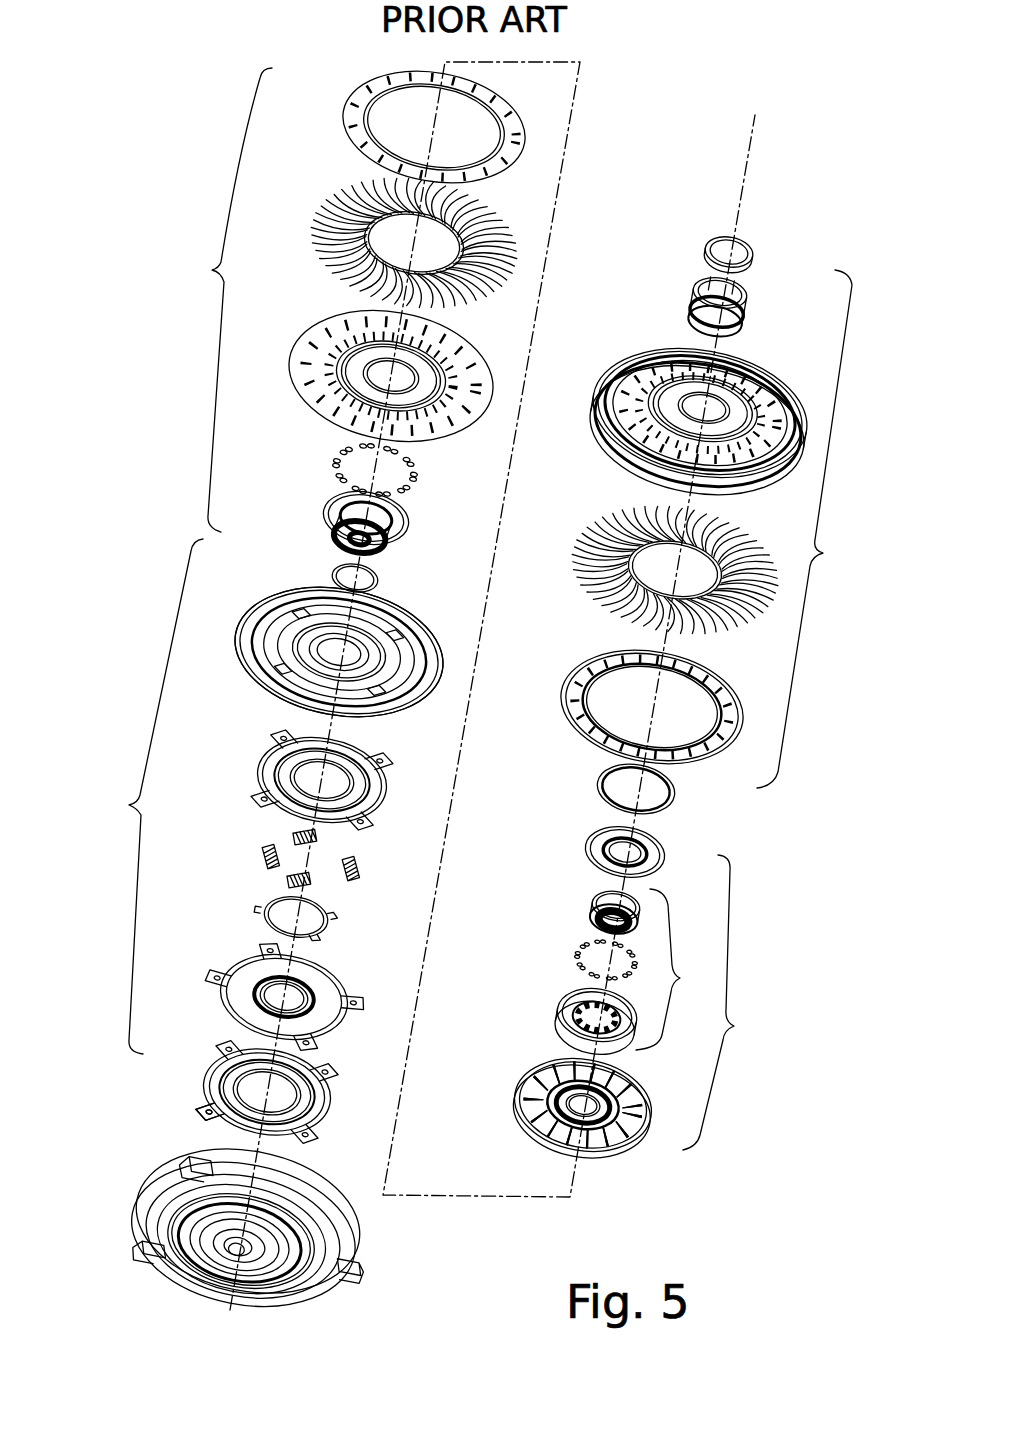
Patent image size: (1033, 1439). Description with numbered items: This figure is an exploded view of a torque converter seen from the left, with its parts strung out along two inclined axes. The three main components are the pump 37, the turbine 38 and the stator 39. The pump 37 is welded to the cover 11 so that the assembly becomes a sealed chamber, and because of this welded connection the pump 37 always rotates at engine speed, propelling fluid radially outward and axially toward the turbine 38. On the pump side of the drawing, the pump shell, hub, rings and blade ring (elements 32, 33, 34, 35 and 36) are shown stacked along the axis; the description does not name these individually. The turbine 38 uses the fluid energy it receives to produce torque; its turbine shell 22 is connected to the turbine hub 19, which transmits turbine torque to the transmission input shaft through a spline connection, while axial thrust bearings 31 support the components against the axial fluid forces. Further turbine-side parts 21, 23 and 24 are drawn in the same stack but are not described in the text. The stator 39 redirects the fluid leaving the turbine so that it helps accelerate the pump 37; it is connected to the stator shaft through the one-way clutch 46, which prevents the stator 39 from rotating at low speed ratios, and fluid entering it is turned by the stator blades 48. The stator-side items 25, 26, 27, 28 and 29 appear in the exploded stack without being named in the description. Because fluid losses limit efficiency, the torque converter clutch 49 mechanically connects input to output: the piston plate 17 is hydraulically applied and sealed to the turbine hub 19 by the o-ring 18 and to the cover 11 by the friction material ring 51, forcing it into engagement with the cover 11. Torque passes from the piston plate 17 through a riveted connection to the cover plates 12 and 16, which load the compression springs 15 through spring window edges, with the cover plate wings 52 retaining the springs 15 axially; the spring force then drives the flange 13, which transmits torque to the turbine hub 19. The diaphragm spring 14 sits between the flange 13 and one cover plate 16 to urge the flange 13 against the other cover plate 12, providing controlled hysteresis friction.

The cover 11 is at (159, 1138).
The cover plate 12 is at (202, 1055).
The flange 13 is at (217, 960).
The diaphragm spring 14 is at (250, 904).
The compression springs 15 is at (245, 825).
The cover plate 16 is at (245, 743).
The piston plate 17 is at (237, 603).
The o-ring 18 is at (317, 558).
The turbine hub 19 is at (307, 502).
The rollers 21 is at (330, 452).
The turbine shell 22 is at (292, 335).
The turbine blades 23 is at (314, 207).
The turbine core ring 24 is at (333, 112).
The stator 25 is at (503, 1065).
The one-way clutch inner race 26 is at (545, 997).
The clutch rollers 27 is at (563, 947).
The bearing 28 is at (578, 888).
The thrust washer 29 is at (577, 830).
The axial thrust bearings 31 is at (585, 767).
The pump core ring 32 is at (568, 652).
The pump blades 33 is at (590, 510).
The pump shell 34 is at (612, 343).
The pump hub 35 is at (678, 292).
The ring 36 is at (697, 227).
The pump 37 is at (821, 529).
The turbine 38 is at (226, 300).
The stator 39 is at (736, 1002).
The one-way clutch 46 is at (682, 969).
The stator blades 48 is at (518, 1095).
The torque converter clutch 49 is at (147, 796).
The friction material ring 51 is at (246, 656).
The cover plate wings 52 is at (205, 1086).